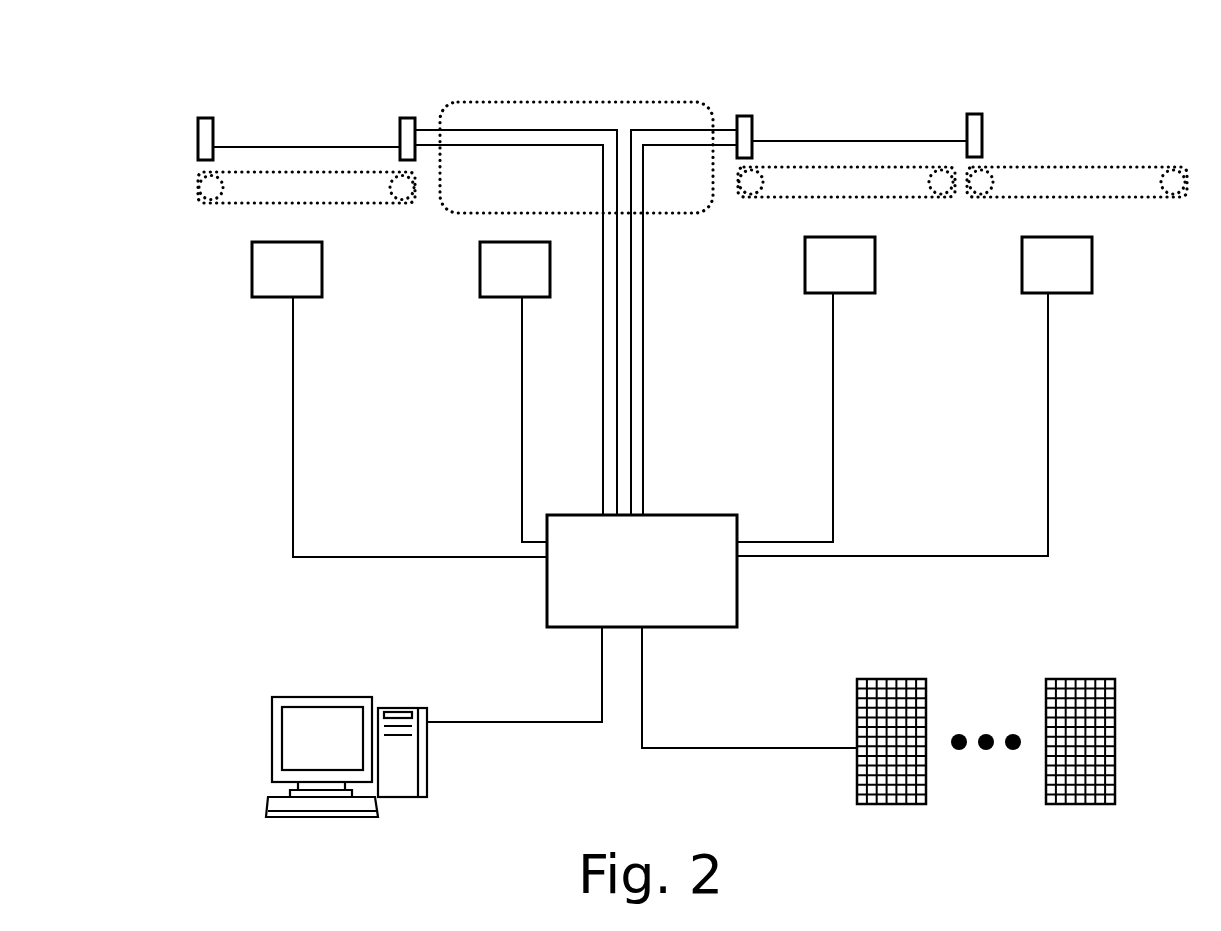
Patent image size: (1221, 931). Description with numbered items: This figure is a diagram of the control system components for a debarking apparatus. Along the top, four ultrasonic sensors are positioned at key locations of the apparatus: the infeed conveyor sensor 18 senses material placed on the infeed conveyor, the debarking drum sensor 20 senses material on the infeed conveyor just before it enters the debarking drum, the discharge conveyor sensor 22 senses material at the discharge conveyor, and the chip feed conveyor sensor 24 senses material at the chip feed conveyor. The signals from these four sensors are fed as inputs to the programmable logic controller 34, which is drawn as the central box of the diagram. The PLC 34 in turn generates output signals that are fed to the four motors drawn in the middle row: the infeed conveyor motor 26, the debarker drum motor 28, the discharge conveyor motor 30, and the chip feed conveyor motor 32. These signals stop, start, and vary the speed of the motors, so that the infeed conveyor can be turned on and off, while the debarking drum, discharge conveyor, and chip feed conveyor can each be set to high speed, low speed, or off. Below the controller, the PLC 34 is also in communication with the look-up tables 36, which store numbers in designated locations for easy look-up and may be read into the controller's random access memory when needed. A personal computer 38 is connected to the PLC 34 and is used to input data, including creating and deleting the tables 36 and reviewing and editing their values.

The infeed conveyor sensor 18 is at (200, 102).
The debarking drum sensor 20 is at (401, 102).
The discharge conveyor sensor 22 is at (752, 100).
The chip feed conveyor sensor 24 is at (982, 100).
The infeed conveyor motor 26 is at (238, 270).
The debarker drum motor 28 is at (468, 268).
The discharge conveyor motor 30 is at (791, 280).
The chip feed conveyor motor 32 is at (1007, 278).
The programmable logic controller (PLC) 34 is at (696, 500).
The look-up tables 36 is at (925, 665).
The personal computer 38 is at (265, 723).